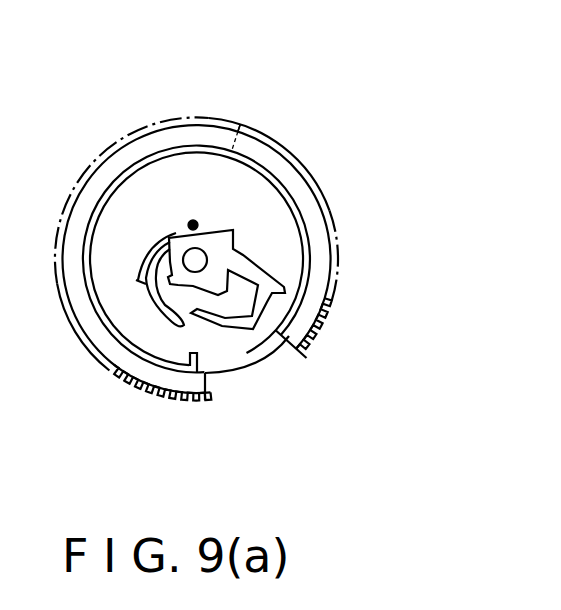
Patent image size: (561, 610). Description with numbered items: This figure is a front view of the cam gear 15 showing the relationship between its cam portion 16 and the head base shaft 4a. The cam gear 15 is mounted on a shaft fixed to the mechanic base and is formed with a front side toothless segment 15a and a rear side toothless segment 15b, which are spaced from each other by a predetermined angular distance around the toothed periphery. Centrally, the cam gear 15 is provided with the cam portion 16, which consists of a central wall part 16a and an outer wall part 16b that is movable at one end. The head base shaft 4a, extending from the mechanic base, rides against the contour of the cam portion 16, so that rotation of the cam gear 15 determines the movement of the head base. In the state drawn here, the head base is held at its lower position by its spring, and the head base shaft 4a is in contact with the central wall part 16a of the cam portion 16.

The cam gear 15 is at (137, 152).
The front side toothless segment 15a is at (273, 363).
The rear side toothless segment 15b is at (280, 162).
The head base shaft 4a is at (190, 222).
The cam portion 16 is at (262, 453).
The central wall part 16a is at (277, 283).
The outer wall part 16b is at (158, 308).